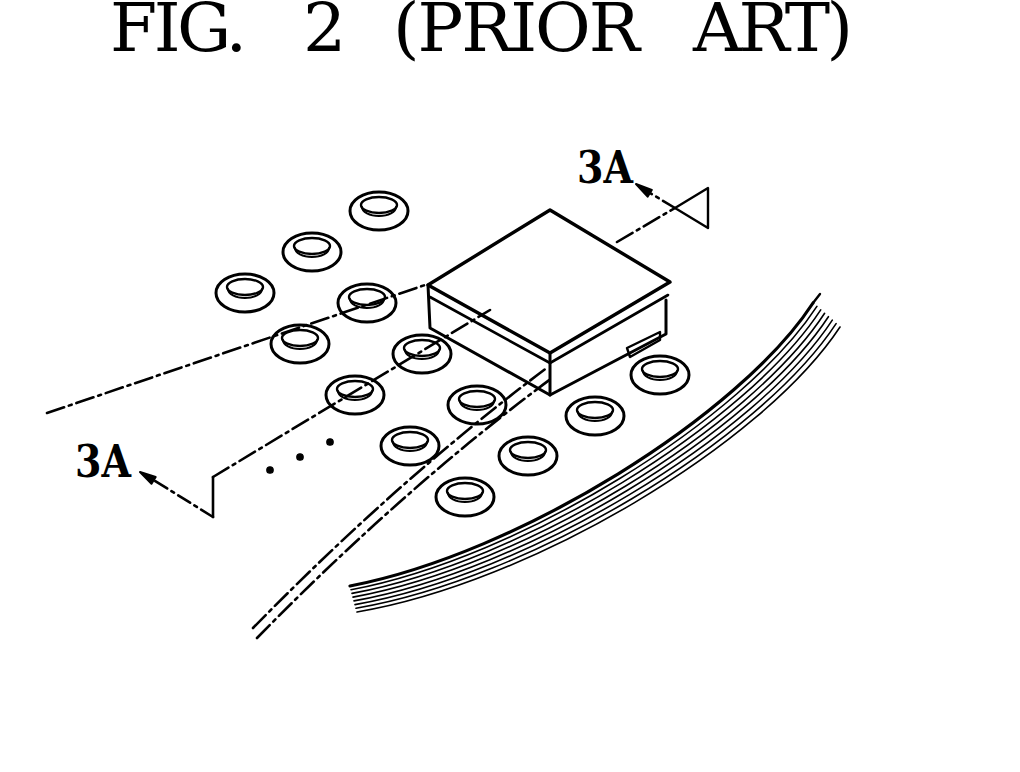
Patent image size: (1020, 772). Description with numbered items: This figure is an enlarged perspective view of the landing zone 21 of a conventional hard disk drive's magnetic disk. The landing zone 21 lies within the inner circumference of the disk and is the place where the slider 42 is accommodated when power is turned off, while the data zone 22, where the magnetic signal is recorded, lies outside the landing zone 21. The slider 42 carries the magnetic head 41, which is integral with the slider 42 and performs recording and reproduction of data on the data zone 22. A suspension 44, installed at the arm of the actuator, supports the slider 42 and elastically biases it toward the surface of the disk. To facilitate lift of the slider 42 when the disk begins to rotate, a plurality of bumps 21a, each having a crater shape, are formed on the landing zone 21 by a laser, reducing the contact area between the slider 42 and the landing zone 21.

The suspension 44 is at (103, 418).
The landing zone 21 is at (393, 536).
The bumps 21a is at (325, 383).
The slider 42 is at (653, 310).
The magnetic head 41 is at (658, 341).
The data zone 22 is at (634, 470).